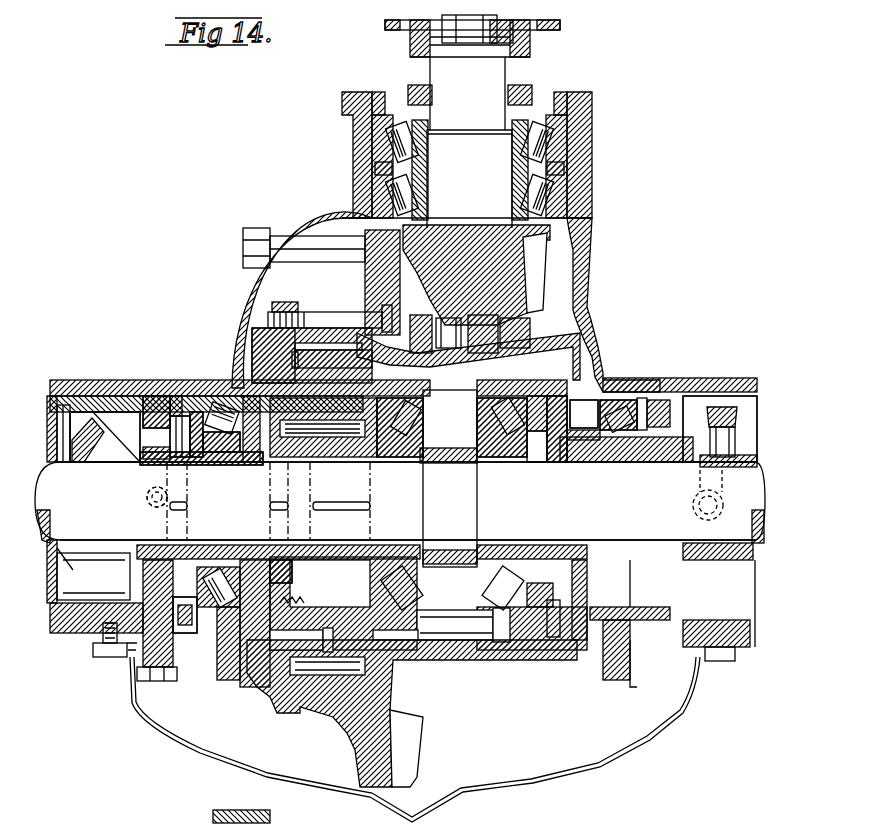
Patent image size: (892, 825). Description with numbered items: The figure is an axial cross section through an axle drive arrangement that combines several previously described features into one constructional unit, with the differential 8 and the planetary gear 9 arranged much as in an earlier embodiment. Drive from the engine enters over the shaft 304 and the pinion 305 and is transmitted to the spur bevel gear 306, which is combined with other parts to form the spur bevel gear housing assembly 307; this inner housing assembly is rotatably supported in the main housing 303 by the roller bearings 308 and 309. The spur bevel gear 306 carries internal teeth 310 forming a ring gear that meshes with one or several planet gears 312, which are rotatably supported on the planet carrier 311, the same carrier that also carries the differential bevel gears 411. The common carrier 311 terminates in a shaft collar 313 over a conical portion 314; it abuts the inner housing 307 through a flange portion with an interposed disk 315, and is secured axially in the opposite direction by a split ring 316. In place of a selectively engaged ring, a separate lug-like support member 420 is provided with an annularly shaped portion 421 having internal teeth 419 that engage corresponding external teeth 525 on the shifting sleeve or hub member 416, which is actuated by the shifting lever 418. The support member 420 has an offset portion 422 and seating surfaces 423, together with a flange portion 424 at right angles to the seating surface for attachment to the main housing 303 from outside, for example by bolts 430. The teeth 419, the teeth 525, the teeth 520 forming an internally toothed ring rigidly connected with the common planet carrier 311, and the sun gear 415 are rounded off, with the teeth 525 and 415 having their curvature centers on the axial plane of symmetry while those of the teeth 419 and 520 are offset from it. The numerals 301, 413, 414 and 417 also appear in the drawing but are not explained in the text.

The shaft 304 is at (502, 86).
The spur bevel gear 306 is at (352, 216).
The pinion 305 is at (530, 283).
The main housing 303 is at (585, 297).
The spur bevel gear housing assembly 307 is at (570, 357).
The teeth 310 is at (352, 343).
The bolt 301 is at (347, 318).
The planet gears 312 is at (262, 338).
The planetary gear 9 is at (292, 355).
The shifting lever 418 is at (118, 430).
The annularly shaped portion 421 is at (178, 445).
The bearing 413 is at (205, 400).
The roller bearing 309 is at (216, 398).
The conical portion 314 is at (598, 385).
The roller bearing 308 is at (636, 395).
The split ring 316 is at (690, 430).
The shaft collar 313 is at (708, 398).
The internal teeth 419 is at (174, 450).
The teeth 525 is at (153, 544).
The shifting sleeve 416 is at (260, 463).
The sun gear 415 is at (366, 447).
The axle shaft assembly 417 is at (410, 521).
The differential 8 is at (460, 519).
The differential bevel gears 411 is at (490, 427).
The disk 315 is at (578, 465).
The teeth 520 is at (284, 570).
The support member 420 is at (153, 602).
The offset portion 422 is at (128, 655).
The seating surfaces 423 is at (130, 652).
The bolts 430 is at (163, 681).
The flange portion 424 is at (167, 663).
The backing plate 414 is at (210, 683).
The planet carrier 311 is at (393, 660).